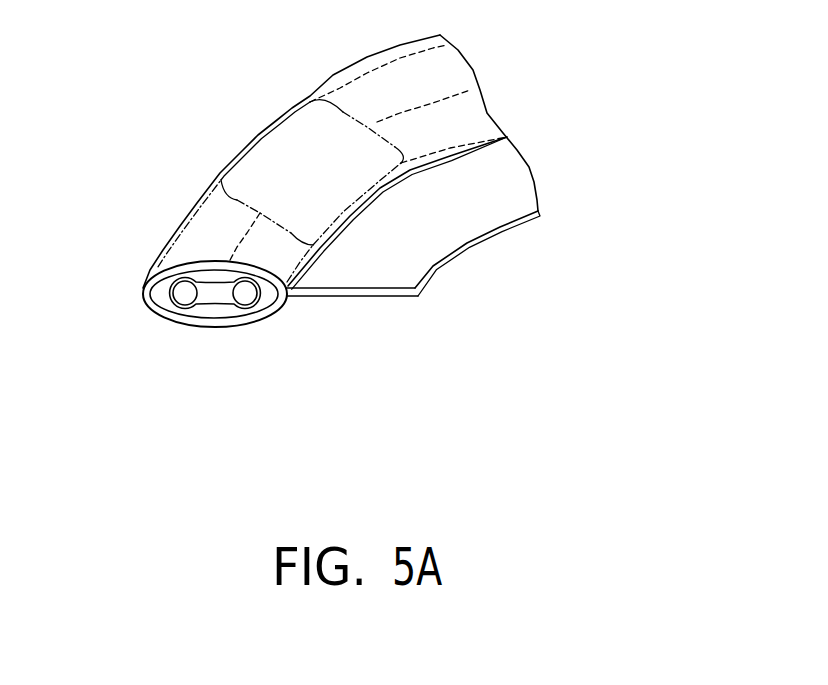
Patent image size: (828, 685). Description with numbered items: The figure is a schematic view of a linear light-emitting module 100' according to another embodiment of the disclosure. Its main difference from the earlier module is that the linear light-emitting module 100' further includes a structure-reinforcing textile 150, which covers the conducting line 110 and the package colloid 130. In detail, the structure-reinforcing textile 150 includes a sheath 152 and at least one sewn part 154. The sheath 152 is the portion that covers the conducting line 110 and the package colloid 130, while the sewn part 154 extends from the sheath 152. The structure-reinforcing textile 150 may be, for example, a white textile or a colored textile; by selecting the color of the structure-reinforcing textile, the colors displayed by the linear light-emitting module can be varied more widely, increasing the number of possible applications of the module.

The linear light-emitting module 100' is at (357, 232).
The conducting line 110 is at (200, 280).
The package colloid 130 is at (283, 153).
The structure-reinforcing textile 150 is at (280, 354).
The sheath 152 is at (220, 327).
The sewn part 154 is at (358, 296).